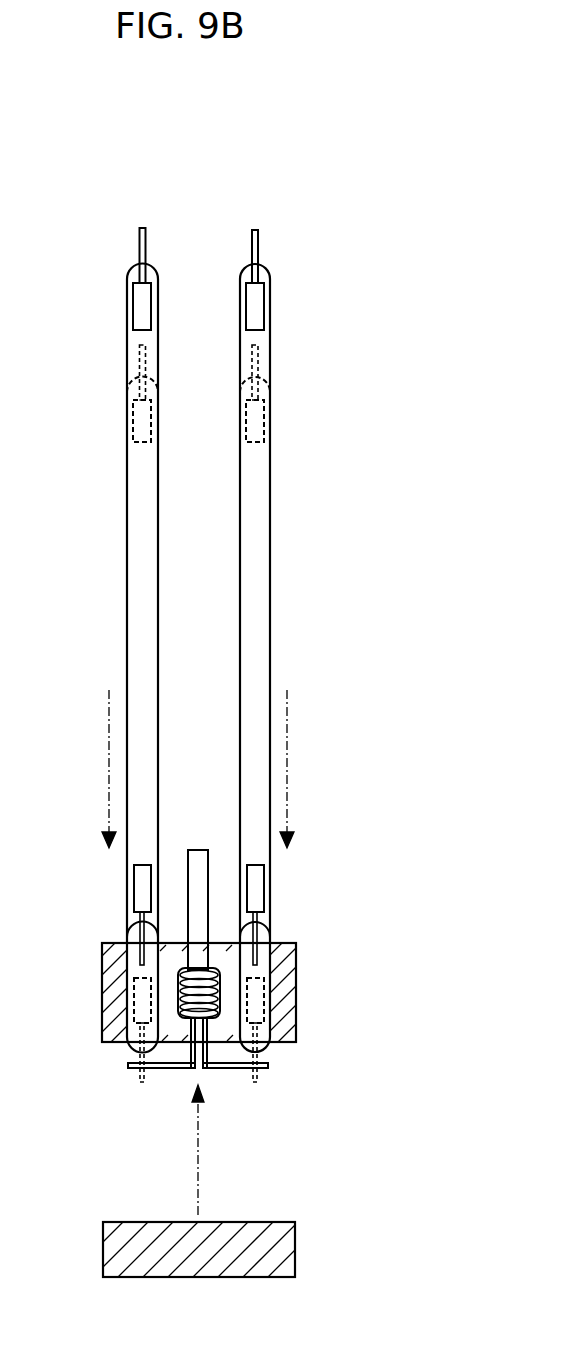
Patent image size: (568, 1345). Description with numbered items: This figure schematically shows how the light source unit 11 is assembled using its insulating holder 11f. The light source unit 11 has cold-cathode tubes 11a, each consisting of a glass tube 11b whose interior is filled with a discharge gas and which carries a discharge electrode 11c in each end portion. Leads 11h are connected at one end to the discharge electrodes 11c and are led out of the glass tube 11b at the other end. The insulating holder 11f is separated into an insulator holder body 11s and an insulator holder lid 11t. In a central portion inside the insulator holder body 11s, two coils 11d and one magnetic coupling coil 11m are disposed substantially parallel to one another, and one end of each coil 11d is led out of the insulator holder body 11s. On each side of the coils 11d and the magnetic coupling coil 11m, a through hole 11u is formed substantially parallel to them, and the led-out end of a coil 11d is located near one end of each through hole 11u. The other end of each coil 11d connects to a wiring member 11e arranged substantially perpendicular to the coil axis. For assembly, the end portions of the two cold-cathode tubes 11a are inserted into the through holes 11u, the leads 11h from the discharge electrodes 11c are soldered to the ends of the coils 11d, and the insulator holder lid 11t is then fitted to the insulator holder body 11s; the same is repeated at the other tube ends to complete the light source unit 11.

The light source unit 11 is at (322, 453).
The cold-cathode tube 11a is at (110, 638).
The glass tube 11b is at (127, 522).
The discharge electrode 11c is at (140, 310).
The lead 11h is at (139, 246).
The wiring member 11e is at (205, 851).
The magnetic coupling coil 11m is at (181, 968).
The coil 11d is at (185, 1020).
The insulating holder 11f is at (372, 1083).
The insulator holder body 11s is at (277, 1021).
The through hole 11u is at (133, 965).
The insulator holder lid 11t is at (295, 1222).